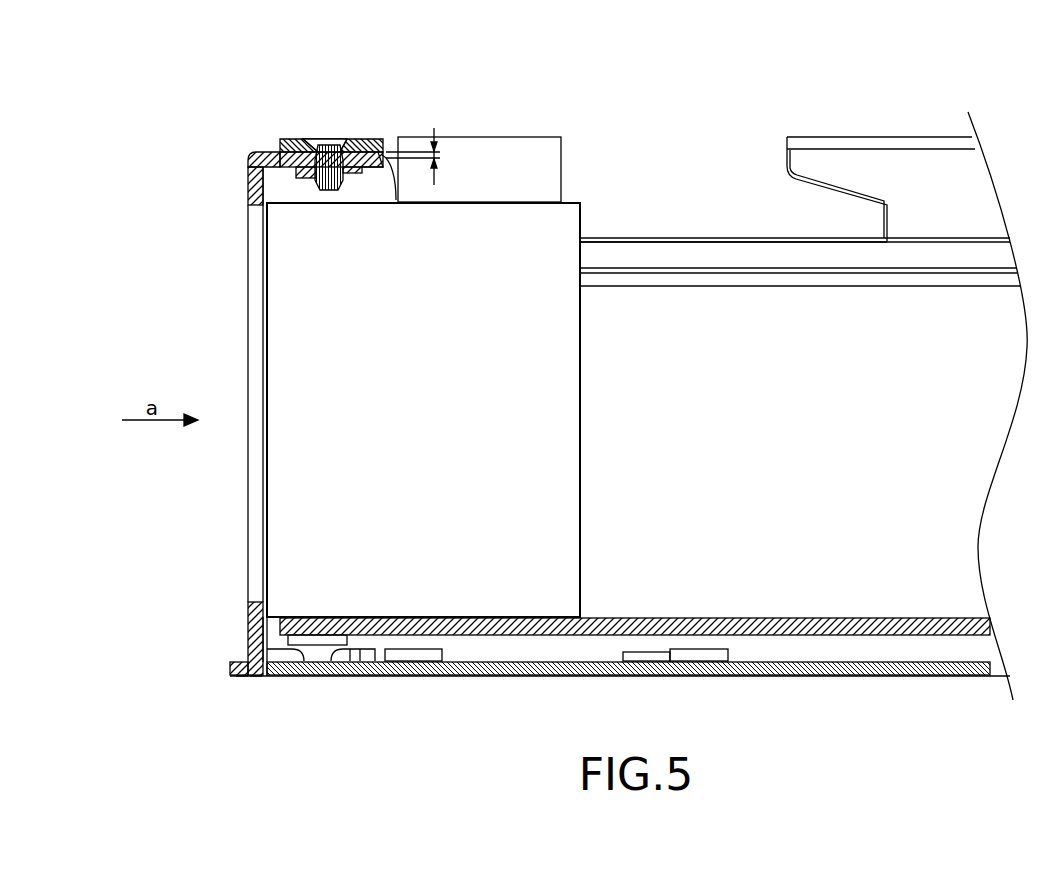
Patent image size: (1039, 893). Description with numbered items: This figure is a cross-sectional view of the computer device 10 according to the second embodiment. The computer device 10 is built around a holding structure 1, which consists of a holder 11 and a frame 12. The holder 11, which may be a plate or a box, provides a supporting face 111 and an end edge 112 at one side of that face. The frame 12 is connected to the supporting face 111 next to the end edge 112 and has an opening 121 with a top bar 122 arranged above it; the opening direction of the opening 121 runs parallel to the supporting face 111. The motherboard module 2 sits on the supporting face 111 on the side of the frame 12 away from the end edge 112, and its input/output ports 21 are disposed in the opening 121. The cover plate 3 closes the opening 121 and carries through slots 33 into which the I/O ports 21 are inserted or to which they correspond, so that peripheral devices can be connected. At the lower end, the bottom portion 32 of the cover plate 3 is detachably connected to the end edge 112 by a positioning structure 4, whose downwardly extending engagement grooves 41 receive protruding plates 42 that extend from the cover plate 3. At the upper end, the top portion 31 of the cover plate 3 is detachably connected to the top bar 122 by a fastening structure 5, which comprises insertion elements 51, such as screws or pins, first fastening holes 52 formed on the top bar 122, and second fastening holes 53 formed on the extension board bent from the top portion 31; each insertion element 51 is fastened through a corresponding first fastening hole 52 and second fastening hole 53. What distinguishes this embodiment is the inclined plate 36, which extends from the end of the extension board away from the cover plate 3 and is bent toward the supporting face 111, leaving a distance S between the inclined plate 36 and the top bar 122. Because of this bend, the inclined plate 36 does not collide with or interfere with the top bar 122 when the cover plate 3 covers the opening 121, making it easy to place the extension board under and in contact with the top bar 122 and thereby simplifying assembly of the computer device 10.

The computer device 10 is at (623, 44).
The holding structure 1 is at (620, 669).
The holder 11 is at (395, 660).
The frame 12 is at (283, 652).
The supporting face 111 is at (595, 661).
The end edge 112 is at (233, 666).
The motherboard module 2 is at (799, 612).
The input/output (I/O) ports 21 is at (288, 363).
The cover plate 3 is at (249, 190).
The top portion of the cover plate 31 is at (257, 142).
The bottom portion of the cover plate 32 is at (245, 650).
The through slots 33 is at (258, 208).
The inclined plate 36 is at (373, 170).
The positioning structure 4 is at (237, 740).
The engagement grooves 41 is at (242, 678).
The protruding plates 42 is at (256, 678).
The fastening structure 5 is at (334, 104).
The insertion elements 51 is at (326, 139).
The first fastening holes 52 is at (351, 139).
The second fastening holes 53 is at (336, 143).
The opening 121 is at (278, 151).
The top bar 122 is at (378, 139).